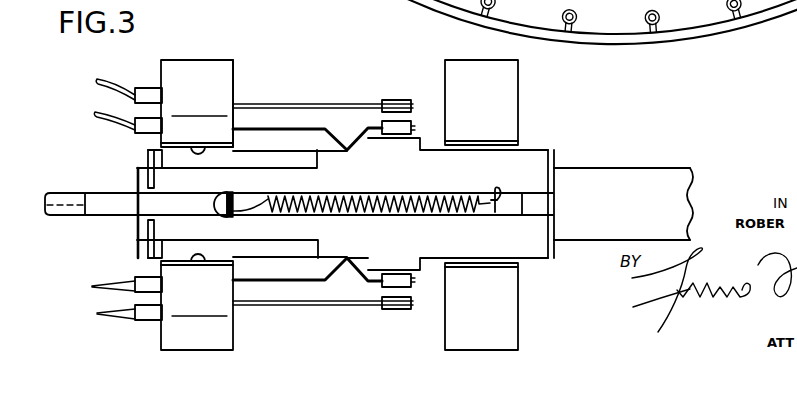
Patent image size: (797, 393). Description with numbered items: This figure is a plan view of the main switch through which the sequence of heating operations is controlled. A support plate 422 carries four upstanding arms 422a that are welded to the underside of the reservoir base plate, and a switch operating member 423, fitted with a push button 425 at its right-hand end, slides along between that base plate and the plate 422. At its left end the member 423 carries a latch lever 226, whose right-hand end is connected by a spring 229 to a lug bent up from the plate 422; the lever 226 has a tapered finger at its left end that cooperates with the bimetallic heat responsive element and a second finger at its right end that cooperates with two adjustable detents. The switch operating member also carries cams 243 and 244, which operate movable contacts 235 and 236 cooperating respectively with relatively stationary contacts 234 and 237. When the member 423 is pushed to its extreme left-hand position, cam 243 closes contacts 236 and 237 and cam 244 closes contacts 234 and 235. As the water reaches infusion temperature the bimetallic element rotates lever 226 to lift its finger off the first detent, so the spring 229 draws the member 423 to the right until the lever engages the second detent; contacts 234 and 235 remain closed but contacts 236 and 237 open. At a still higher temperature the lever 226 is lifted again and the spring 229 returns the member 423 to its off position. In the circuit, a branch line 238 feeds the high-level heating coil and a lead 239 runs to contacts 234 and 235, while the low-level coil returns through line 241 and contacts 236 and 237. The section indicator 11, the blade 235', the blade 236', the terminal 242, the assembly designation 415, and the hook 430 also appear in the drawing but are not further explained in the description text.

The section line indicator 11 is at (55, 193).
The latch lever 226 is at (117, 208).
The spring 229 is at (455, 193).
The stationary contact 234 is at (386, 99).
The movable contact 235 is at (408, 104).
The movable contact blade 235' is at (307, 112).
The movable contact 236 is at (403, 311).
The movable contact blade 236' is at (307, 300).
The stationary contact 237 is at (378, 300).
The line 238 is at (149, 88).
The lead 239 is at (147, 128).
The line 241 is at (148, 278).
The lead terminal 242 is at (147, 320).
The cam 243 is at (407, 260).
The cam 244 is at (388, 146).
The switch assembly 415 is at (318, 58).
The support plate 422 is at (537, 204).
The upstanding arms 422a is at (497, 117).
The switch operating member 423 is at (233, 77).
The push button 425 is at (622, 177).
The spring retaining hook 430 is at (495, 213).